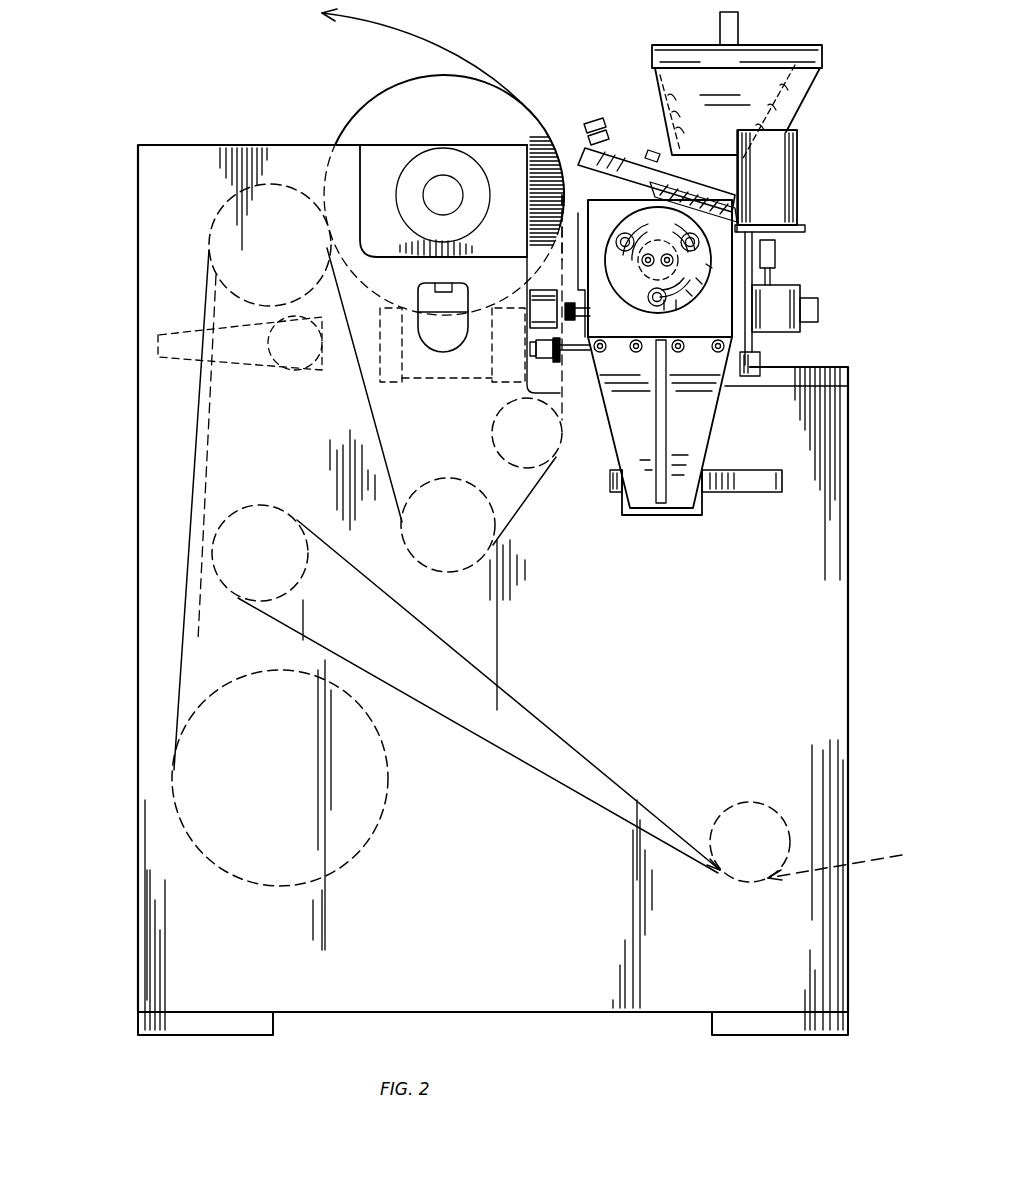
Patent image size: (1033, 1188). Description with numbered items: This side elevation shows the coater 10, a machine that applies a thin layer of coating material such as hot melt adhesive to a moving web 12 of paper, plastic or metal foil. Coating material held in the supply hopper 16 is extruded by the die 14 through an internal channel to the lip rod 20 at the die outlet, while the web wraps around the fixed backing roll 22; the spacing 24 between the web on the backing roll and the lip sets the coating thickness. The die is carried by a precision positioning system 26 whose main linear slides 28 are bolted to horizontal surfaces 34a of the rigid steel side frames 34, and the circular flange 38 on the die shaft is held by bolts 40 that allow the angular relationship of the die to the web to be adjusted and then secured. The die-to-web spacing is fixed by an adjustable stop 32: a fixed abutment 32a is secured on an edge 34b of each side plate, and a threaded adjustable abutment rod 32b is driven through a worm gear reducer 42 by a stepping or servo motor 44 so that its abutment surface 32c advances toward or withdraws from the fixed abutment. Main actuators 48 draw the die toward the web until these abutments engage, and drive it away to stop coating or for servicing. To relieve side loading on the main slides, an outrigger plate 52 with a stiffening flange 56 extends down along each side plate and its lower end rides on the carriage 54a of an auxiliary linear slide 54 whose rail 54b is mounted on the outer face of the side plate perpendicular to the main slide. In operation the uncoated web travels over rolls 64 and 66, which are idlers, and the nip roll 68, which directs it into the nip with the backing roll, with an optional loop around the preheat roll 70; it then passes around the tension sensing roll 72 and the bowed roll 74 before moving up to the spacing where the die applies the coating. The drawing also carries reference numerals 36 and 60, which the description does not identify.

The coater 10 is at (243, 80).
The web 12 is at (478, 58).
The die 14 is at (630, 168).
The supply hopper 16 is at (812, 98).
The lip rod 20 is at (548, 195).
The backing roll 22 is at (386, 96).
The spacing 24 is at (563, 185).
The precision positioning system 26 is at (820, 245).
The main linear slides 28 is at (762, 358).
The adjustable stop 32 is at (552, 272).
The fixed abutment 32a is at (548, 300).
The adjustable abutment rod 32b is at (582, 325).
The abutment surface 32c is at (575, 310).
The side frames 34 is at (692, 645).
The horizontal surfaces 34a is at (826, 388).
The edge 34b is at (530, 350).
The direction of movement 36 is at (827, 345).
The circular flange 38 is at (632, 228).
The bolts 40 is at (641, 240).
The worm gear reducer 42 is at (800, 292).
The stepping or servo motor 44 is at (800, 162).
The main actuators 48 is at (450, 385).
The outrigger plate 52 is at (716, 395).
The auxiliary linear slide 54 is at (705, 497).
The carriage 54a is at (622, 515).
The rail 54b is at (742, 470).
The stiffening flange 56 is at (656, 398).
The sensor 60 is at (595, 120).
The roll 64 is at (762, 802).
The roll 66 is at (300, 586).
The nip roll 68 is at (215, 205).
The preheat roll 70 is at (388, 808).
The tension sensing roll 72 is at (448, 478).
The bowed roll 74 is at (492, 430).